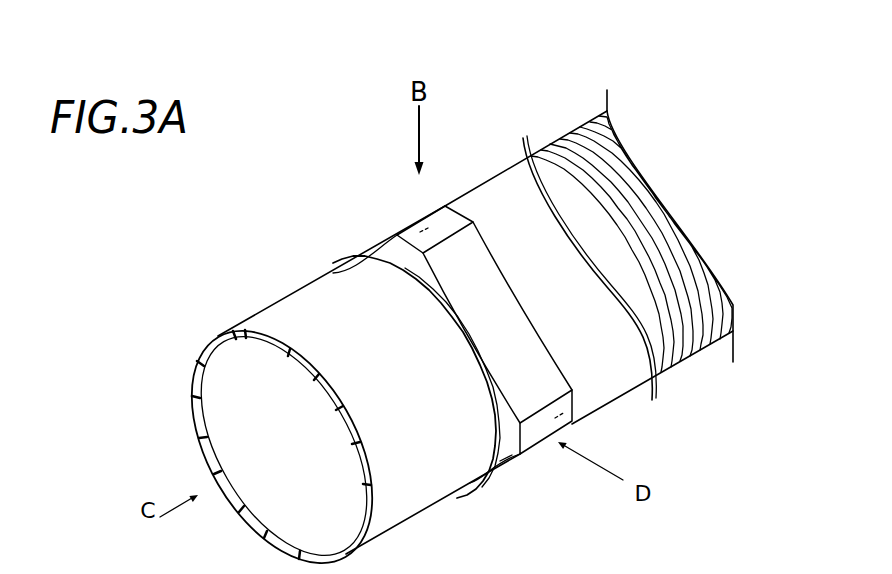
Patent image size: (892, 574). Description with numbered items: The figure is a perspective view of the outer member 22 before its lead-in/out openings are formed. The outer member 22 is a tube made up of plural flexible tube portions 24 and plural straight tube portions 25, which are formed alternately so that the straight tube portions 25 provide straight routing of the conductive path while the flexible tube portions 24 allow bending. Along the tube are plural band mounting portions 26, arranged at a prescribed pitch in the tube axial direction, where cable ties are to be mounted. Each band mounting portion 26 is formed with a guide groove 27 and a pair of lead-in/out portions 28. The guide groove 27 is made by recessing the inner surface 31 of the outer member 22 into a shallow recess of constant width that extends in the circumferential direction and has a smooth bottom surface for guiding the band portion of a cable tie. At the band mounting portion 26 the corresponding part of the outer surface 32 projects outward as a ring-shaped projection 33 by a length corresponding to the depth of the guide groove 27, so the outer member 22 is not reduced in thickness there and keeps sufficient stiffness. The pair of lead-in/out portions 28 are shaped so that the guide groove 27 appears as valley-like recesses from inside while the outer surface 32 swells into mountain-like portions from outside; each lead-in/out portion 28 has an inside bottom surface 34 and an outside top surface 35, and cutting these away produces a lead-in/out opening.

The outer member 22 is at (276, 240).
The flexible tube portions 24 is at (592, 157).
The straight tube portions 25 is at (508, 180).
The band mounting portions 26 is at (540, 314).
The guide groove 27 is at (508, 466).
The lead-in/out portions 28 is at (402, 257).
The inner surface 31 is at (238, 380).
The outer surface 32 is at (283, 315).
The ring-shaped projection 33 is at (480, 482).
The inside bottom surface 34 is at (428, 232).
The outside top surface 35 is at (445, 205).